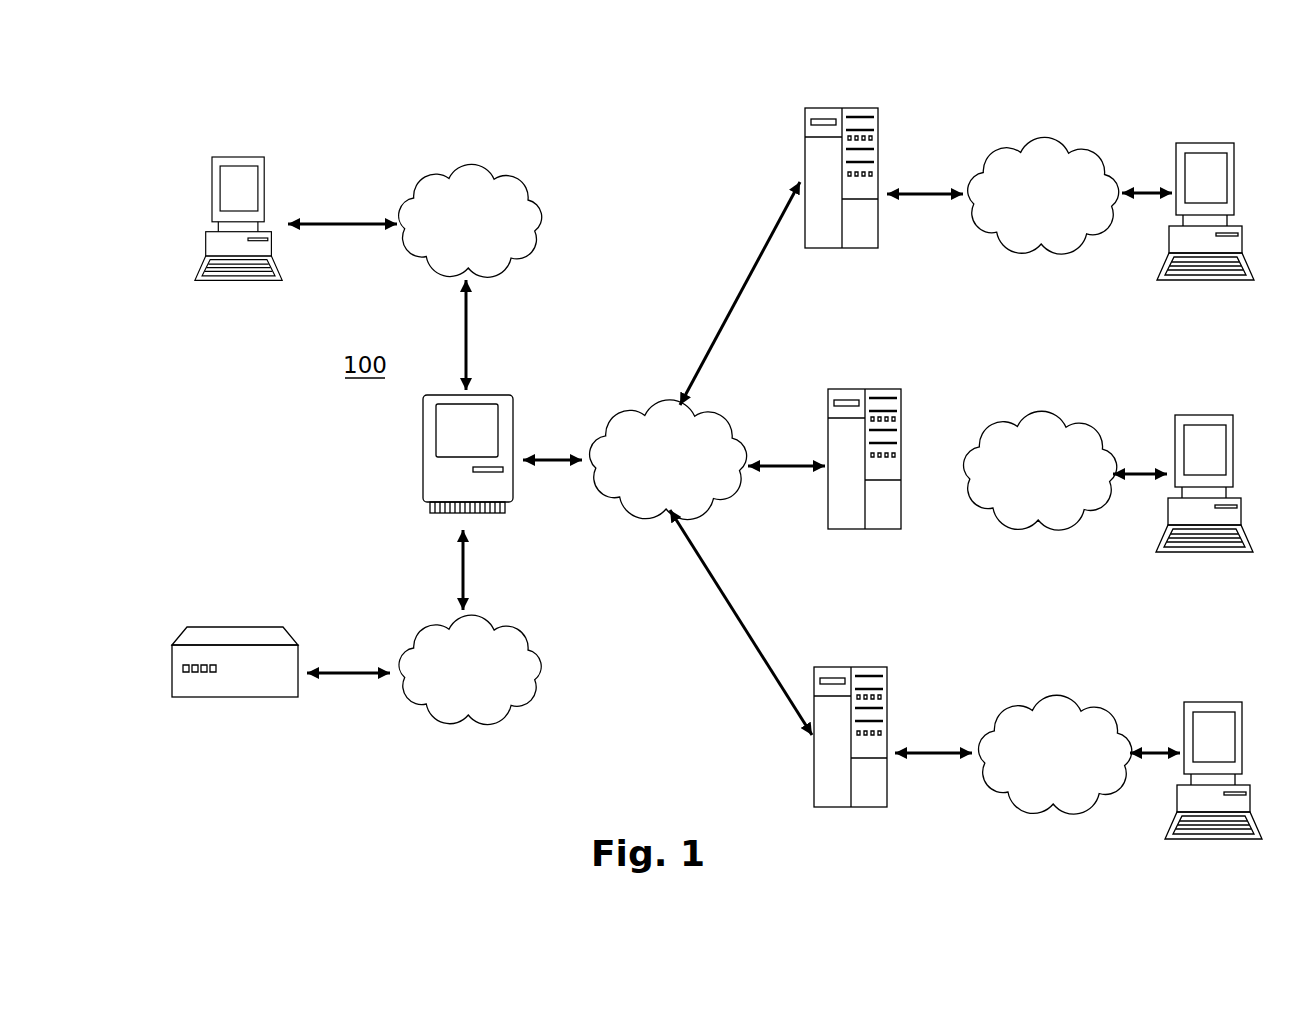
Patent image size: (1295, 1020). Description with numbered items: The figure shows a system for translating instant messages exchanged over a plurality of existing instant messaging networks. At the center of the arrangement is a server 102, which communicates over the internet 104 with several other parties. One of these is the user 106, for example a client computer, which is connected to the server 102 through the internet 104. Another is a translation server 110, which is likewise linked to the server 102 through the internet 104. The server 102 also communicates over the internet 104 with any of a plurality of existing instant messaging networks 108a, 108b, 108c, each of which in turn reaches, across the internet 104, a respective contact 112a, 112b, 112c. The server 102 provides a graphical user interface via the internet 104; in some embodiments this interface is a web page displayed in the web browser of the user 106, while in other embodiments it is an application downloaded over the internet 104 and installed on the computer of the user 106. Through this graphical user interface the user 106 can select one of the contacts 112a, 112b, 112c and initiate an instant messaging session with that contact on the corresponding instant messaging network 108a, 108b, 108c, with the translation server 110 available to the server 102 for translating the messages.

The server 102 is at (512, 393).
The internet 104 is at (502, 177).
The user 106 is at (243, 151).
The instant messaging network 108a is at (858, 102).
The instant messaging network 108b is at (885, 388).
The instant messaging network 108c is at (868, 662).
The translation server 110 is at (235, 622).
The contact 112a is at (1205, 132).
The contact 112b is at (1229, 410).
The contact 112c is at (1214, 690).